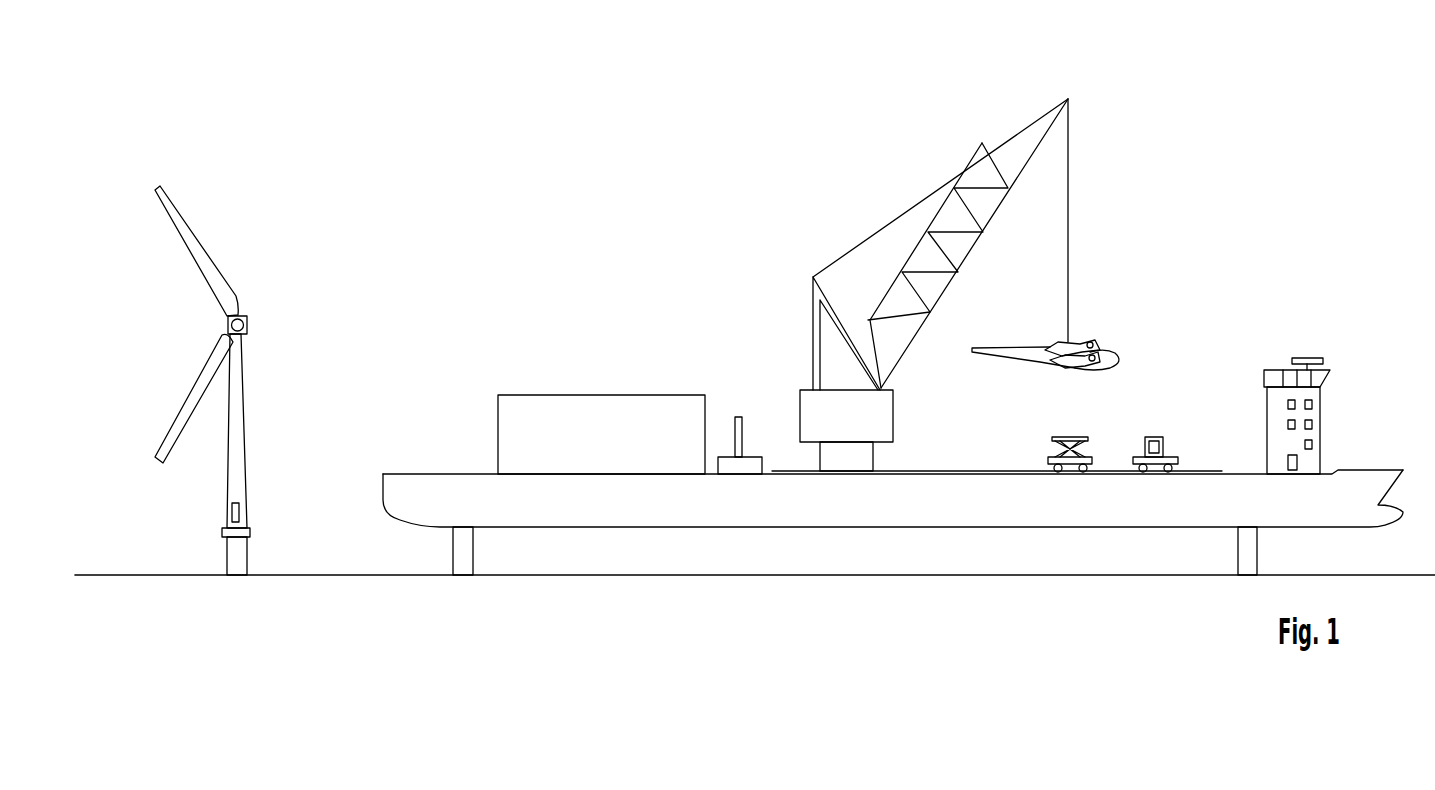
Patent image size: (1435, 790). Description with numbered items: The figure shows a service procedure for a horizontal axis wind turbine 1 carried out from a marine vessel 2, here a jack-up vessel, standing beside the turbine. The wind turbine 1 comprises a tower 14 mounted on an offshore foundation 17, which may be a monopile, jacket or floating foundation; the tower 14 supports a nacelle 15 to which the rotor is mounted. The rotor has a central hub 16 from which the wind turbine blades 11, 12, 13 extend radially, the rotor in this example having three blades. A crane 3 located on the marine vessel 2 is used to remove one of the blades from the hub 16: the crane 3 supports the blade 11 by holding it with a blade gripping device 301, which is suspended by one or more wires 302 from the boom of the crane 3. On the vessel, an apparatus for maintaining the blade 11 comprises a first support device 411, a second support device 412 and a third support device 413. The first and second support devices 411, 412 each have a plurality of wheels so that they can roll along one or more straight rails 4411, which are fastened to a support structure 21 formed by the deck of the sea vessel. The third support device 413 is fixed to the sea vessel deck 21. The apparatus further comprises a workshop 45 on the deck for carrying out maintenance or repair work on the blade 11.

The horizontal axis wind turbine 1 is at (272, 270).
The wind turbine blade 11 is at (1032, 348).
The wind turbine blade 12 is at (198, 234).
The wind turbine blade 13 is at (200, 354).
The tower 14 is at (243, 417).
The nacelle 15 is at (248, 320).
The central hub 16 is at (247, 329).
The offshore foundation 17 is at (228, 553).
The marine vessel 2 is at (380, 498).
The support structure 21 is at (463, 473).
The crane 3 is at (888, 163).
The blade gripping device 301 is at (1090, 372).
The wires 302 is at (1070, 300).
The first support device 411 is at (1178, 462).
The second support device 412 is at (1045, 460).
The third support device 413 is at (735, 430).
The rails 4411 is at (917, 470).
The workshop 45 is at (606, 394).